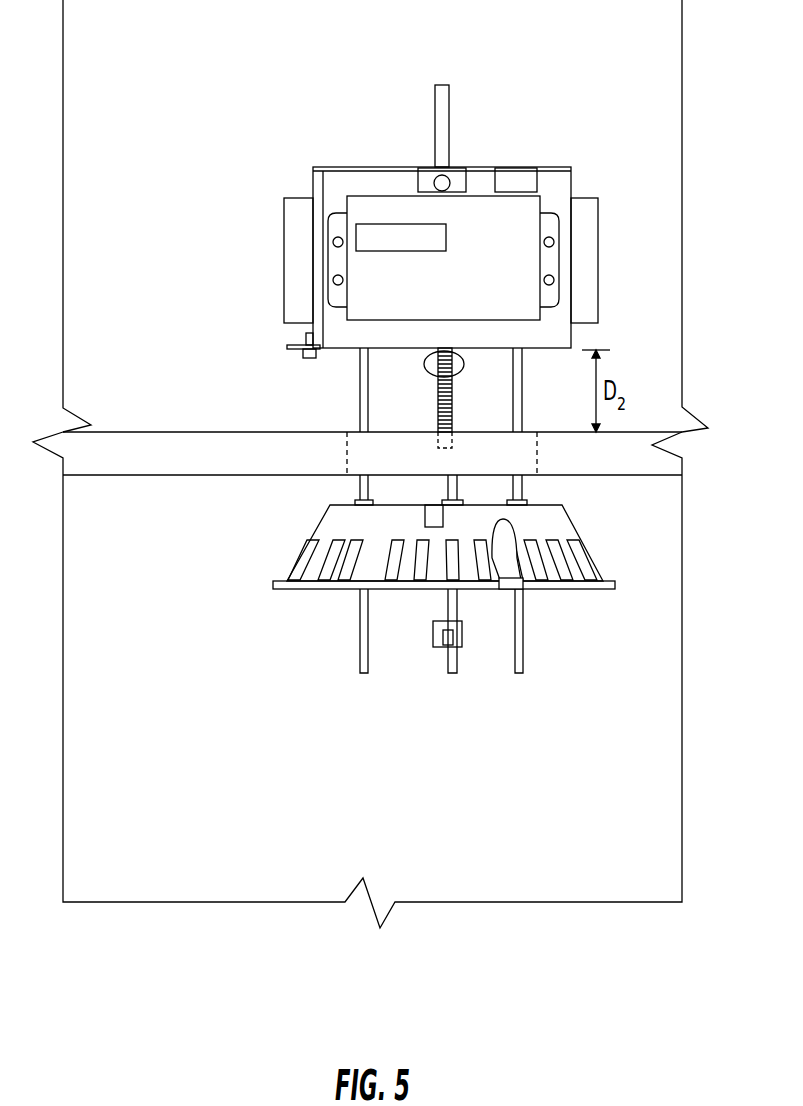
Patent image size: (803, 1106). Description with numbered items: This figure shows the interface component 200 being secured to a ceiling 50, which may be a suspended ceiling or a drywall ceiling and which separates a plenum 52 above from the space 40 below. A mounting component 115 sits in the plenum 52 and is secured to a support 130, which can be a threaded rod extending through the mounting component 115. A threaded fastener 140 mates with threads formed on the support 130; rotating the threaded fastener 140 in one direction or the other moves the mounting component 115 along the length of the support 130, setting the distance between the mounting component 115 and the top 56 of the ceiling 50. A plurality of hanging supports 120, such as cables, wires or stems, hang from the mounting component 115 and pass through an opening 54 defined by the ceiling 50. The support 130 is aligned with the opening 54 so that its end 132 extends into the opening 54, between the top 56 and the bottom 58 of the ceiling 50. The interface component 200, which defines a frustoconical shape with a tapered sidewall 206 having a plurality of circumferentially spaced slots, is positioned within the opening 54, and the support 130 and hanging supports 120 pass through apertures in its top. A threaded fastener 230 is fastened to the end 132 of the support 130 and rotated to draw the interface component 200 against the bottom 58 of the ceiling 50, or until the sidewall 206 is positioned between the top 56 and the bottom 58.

The lower space / room below ceiling 40 is at (383, 854).
The ceiling 50 is at (283, 469).
The plenum 52 is at (383, 31).
The opening 54 is at (398, 464).
The top of the ceiling 56 is at (147, 431).
The bottom of the ceiling 58 is at (212, 476).
The mounting component 115 is at (571, 173).
The hanging supports 120 is at (360, 386).
The support 130 is at (449, 103).
The end of the support 132 is at (446, 448).
The threaded fastener 140 is at (455, 369).
The interface component 200 is at (588, 532).
The sidewall 206 is at (380, 534).
The threaded fastener 230 is at (433, 640).